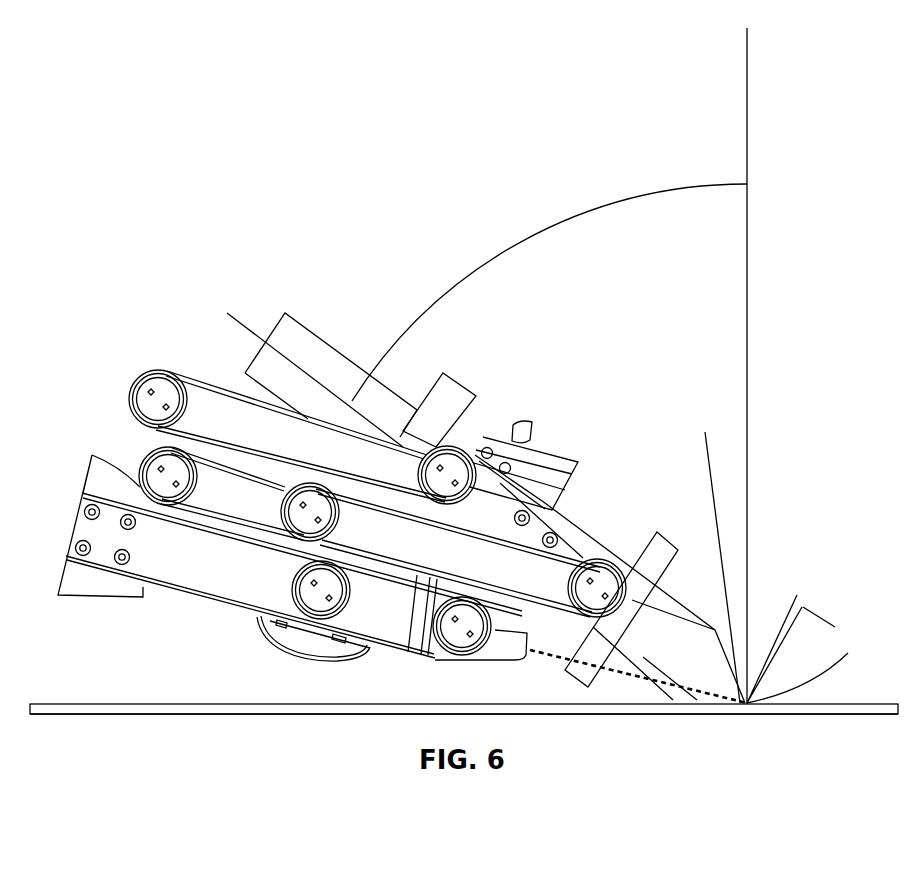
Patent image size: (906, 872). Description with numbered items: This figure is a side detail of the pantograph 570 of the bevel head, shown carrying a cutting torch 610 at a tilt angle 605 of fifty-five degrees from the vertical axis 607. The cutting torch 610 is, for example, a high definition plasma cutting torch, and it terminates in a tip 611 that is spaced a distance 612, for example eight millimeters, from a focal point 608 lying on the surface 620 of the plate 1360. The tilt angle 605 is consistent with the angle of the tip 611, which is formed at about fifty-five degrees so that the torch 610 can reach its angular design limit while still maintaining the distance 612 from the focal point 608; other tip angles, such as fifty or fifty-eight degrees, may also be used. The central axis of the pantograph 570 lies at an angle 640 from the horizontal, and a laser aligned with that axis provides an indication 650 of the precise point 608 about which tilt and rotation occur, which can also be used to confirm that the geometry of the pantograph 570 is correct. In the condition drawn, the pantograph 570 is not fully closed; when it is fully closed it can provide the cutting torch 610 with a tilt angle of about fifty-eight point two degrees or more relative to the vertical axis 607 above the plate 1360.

The pantograph 570 is at (140, 338).
The tilt angle 605 is at (480, 196).
The vertical axis 607 is at (752, 69).
The focal point 608 is at (817, 669).
The cutting torch 610 is at (350, 402).
The tip 611 is at (704, 535).
The distance 612 is at (740, 552).
The surface 620 is at (118, 703).
The angle 640 is at (240, 608).
The indication 650 is at (554, 656).
The plate 1360 is at (207, 714).